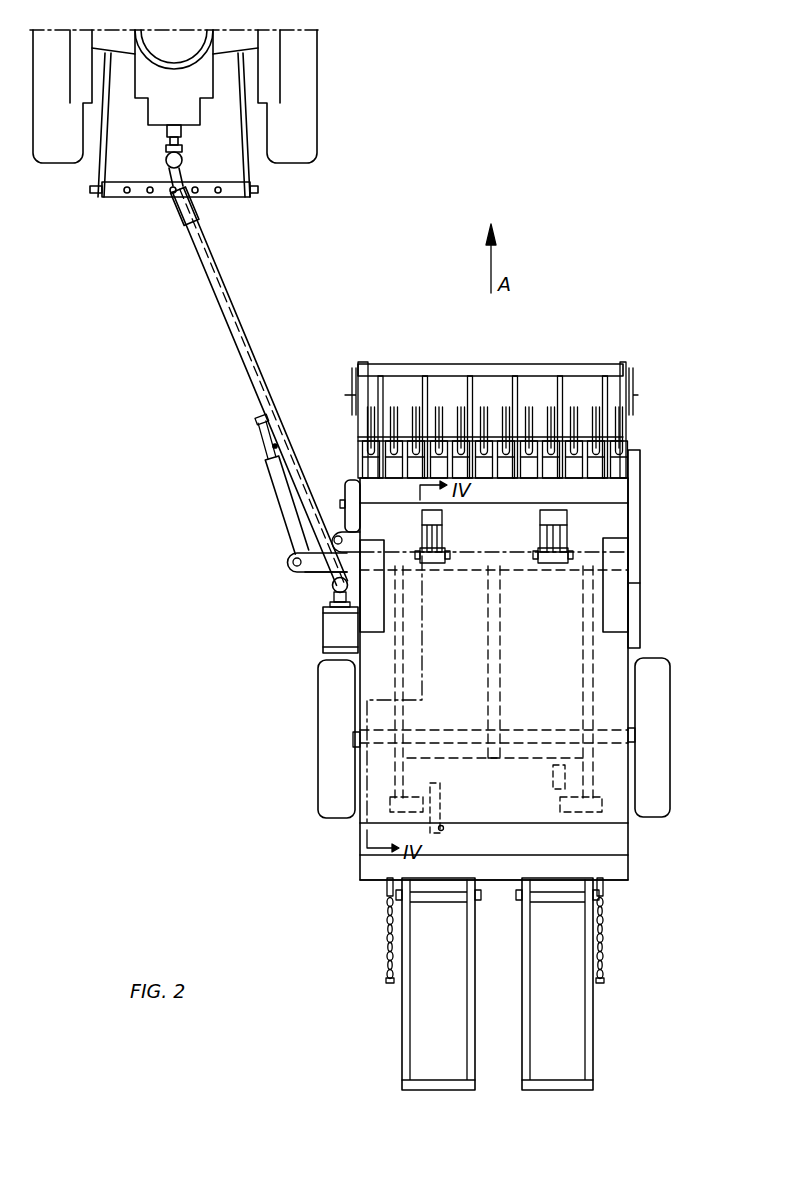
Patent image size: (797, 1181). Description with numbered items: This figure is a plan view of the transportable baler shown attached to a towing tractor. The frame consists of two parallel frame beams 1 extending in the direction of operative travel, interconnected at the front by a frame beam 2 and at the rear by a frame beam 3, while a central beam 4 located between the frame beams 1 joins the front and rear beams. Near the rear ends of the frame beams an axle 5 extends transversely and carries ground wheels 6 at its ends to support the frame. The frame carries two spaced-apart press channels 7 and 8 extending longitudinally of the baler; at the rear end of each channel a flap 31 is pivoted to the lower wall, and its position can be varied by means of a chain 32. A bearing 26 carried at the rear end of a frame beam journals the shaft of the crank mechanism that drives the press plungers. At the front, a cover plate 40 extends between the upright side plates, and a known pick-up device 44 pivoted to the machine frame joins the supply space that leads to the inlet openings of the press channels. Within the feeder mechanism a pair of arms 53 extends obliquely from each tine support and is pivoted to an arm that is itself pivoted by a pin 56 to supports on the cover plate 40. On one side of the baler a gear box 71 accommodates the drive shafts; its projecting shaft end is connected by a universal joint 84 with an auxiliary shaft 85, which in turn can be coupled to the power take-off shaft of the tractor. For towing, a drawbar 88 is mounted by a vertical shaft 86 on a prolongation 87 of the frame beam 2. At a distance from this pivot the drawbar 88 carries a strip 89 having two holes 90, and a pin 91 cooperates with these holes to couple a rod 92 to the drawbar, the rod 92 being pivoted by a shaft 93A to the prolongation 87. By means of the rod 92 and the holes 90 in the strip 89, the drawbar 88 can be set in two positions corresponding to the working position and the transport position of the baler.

The frame beam 1 is at (396, 668).
The frame beam 2 is at (462, 572).
The frame beam 3 is at (452, 760).
The beam 4 is at (498, 660).
The axle 5 is at (531, 736).
The ground wheel 6 is at (318, 803).
The press channel 7 is at (566, 886).
The press channel 8 is at (432, 886).
The bearing 26 is at (413, 797).
The flap 31 is at (521, 1026).
The chain 32 is at (392, 946).
The cover plate 40 is at (631, 495).
The pick-up device 44 is at (624, 441).
The arms 53 is at (444, 536).
The pin 56 is at (450, 556).
The gear box 71 is at (323, 630).
The universal joint 84 is at (332, 592).
The auxiliary shaft 85 is at (229, 303).
The vertical shaft 86 is at (338, 534).
The prolongation 87 is at (312, 576).
The drawbar 88 is at (305, 458).
The strip 89 is at (258, 420).
The holes 90 is at (272, 447).
The pin 91 is at (266, 432).
The rod 92 is at (278, 504).
The shaft 93A is at (291, 563).